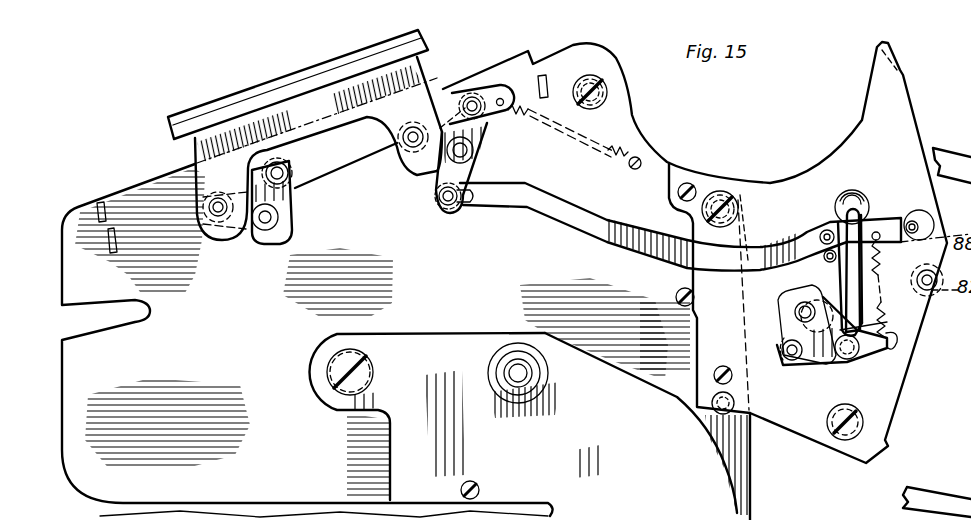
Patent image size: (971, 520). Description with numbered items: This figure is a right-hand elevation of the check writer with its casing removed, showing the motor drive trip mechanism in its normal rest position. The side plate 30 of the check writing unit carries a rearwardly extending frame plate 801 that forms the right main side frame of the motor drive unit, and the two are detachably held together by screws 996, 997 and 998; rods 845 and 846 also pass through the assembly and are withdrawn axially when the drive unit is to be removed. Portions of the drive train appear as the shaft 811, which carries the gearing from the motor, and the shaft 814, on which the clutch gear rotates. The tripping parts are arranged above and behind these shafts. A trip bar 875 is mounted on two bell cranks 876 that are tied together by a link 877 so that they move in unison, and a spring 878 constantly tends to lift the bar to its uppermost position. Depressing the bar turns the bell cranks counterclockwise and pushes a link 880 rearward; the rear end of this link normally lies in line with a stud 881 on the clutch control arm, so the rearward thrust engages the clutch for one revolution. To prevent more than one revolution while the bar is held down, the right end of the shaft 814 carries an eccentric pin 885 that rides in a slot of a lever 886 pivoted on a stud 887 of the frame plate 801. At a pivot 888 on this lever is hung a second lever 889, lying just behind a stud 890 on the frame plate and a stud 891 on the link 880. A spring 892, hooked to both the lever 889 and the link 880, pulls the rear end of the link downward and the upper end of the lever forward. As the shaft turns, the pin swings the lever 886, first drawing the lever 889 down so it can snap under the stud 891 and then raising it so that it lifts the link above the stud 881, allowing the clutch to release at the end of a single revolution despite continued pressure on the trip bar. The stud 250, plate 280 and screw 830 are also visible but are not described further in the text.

The side plates 30 is at (406, 341).
The stud 250 is at (515, 368).
The sub plate 280 is at (528, 424).
The frame plate 801 is at (900, 122).
The shaft 811 is at (866, 204).
The shaft 814 is at (829, 259).
The screw 830 is at (840, 432).
The rod 845 is at (602, 88).
The rod 846 is at (723, 200).
The trip bar 875 is at (280, 88).
The bell cranks 876 is at (292, 201).
The link 877 is at (362, 153).
The spring 878 is at (621, 122).
The link 880 is at (595, 212).
The stud 881 is at (920, 227).
The eccentric pin 885 is at (802, 312).
The lever 886 is at (817, 362).
The stud 887 is at (786, 362).
The pivot 888 is at (847, 352).
The lever 889 is at (855, 295).
The stud 890 is at (822, 232).
The stud 891 is at (836, 204).
The spring 892 is at (884, 322).
The screw 996 is at (690, 184).
The screw 997 is at (738, 212).
The screw 998 is at (723, 365).